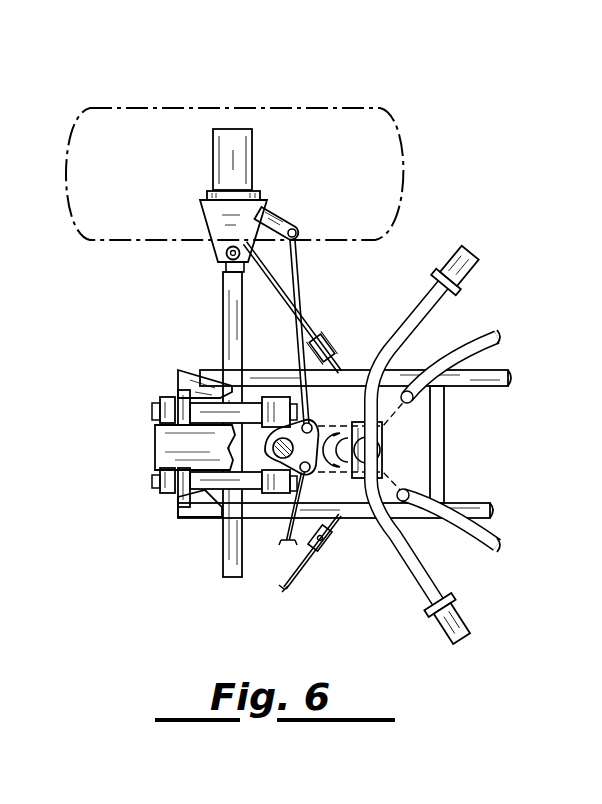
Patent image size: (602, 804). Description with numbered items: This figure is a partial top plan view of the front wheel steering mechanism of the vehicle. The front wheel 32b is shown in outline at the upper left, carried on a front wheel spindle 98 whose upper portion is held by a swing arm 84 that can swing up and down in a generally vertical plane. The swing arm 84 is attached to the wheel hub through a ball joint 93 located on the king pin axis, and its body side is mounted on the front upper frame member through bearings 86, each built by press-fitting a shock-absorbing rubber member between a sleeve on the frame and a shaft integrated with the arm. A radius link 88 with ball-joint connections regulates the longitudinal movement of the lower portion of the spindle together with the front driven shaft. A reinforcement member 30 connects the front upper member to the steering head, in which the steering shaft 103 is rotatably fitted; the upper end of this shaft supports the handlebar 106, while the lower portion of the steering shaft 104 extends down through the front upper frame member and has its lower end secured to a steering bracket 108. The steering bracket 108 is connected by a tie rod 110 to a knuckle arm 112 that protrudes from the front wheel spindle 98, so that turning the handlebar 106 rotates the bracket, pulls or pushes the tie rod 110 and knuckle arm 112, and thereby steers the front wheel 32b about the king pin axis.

The reinforcement member 30 is at (204, 372).
The front wheel 32b is at (390, 125).
The swing arm 84 is at (222, 303).
The bearing 86 is at (176, 495).
The radius link 88 is at (312, 334).
The ball joint 93 is at (226, 256).
The front wheel spindle 98 is at (253, 143).
The steering shaft 103 is at (343, 467).
The steering shaft 104 is at (325, 463).
The handlebar 106 is at (470, 268).
The steering bracket 108 is at (320, 420).
The tie rod 110 is at (299, 271).
The knuckle arm 112 is at (290, 228).